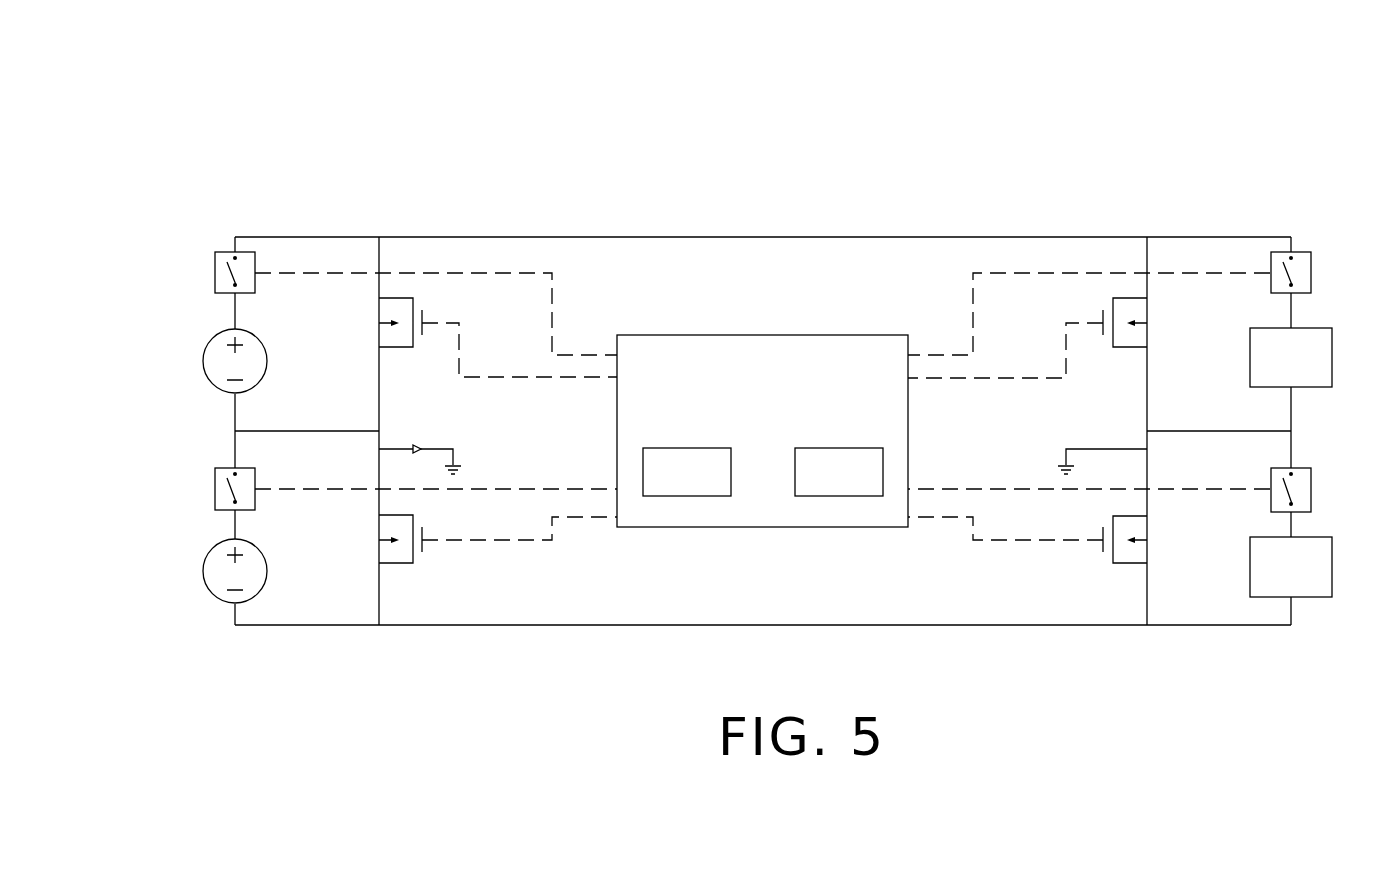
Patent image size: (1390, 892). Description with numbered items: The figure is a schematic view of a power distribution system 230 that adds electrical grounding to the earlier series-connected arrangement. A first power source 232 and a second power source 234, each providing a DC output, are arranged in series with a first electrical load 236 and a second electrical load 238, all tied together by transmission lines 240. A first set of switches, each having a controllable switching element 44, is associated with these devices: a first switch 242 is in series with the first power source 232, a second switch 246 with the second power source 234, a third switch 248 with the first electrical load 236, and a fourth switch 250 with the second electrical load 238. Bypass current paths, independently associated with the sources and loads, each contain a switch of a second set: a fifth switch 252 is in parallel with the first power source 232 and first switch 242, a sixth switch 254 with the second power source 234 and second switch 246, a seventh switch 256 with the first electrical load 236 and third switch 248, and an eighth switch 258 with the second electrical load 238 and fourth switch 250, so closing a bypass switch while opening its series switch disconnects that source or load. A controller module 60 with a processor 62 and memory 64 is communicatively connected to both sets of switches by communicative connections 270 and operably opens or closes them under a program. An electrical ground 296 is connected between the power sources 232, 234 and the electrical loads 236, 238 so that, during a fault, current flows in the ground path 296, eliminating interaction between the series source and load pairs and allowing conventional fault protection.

The power distribution system 230 is at (793, 111).
The first power source 232 is at (204, 330).
The second power source 234 is at (204, 540).
The first electrical load 236 is at (1257, 324).
The second electrical load 238 is at (1257, 534).
The transmission lines 240 is at (822, 237).
The first switch 242 is at (215, 276).
The second switch 246 is at (215, 496).
The third switch 248 is at (1307, 251).
The fourth switch 250 is at (1311, 484).
The controllable switching element 44 is at (239, 263).
The fifth switch 252 is at (412, 294).
The sixth switch 254 is at (412, 570).
The seventh switch 256 is at (1115, 294).
The eighth switch 258 is at (1113, 570).
The communicative connections 270 is at (558, 377).
The electrical ground 296 is at (470, 440).
The controller module 60 is at (747, 481).
The processor 62 is at (687, 472).
The memory 64 is at (839, 472).